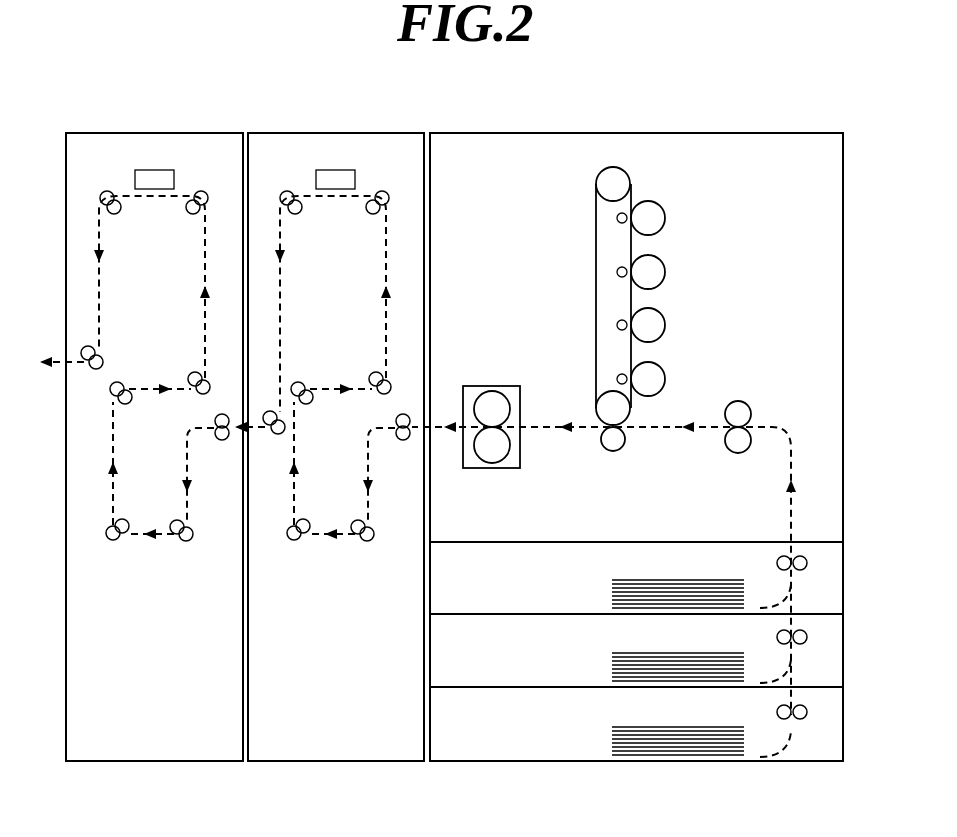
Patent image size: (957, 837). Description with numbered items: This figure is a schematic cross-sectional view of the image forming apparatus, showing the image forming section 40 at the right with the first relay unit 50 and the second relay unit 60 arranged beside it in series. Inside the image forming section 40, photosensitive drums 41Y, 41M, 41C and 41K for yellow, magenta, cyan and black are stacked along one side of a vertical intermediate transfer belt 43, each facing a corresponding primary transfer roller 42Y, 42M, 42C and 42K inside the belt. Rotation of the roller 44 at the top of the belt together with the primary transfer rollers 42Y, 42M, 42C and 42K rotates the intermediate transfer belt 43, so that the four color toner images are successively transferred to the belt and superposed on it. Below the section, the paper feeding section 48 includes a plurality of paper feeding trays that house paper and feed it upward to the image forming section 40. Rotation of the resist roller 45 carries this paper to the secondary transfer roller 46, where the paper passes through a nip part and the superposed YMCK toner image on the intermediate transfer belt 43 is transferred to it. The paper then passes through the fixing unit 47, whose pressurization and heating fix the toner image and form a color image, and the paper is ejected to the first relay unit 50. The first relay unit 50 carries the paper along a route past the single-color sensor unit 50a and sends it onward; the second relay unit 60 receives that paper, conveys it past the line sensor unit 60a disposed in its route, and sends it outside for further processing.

The image forming section 40 is at (792, 132).
The photosensitive drum 41Y is at (664, 214).
The photosensitive drum 41M is at (664, 268).
The photosensitive drum 41C is at (664, 322).
The photosensitive drum 41K is at (664, 376).
The primary transfer roller 42Y is at (617, 216).
The primary transfer roller 42M is at (617, 270).
The primary transfer roller 42C is at (617, 323).
The primary transfer roller 42K is at (617, 377).
The intermediate transfer belt 43 is at (597, 348).
The roller 44 is at (625, 172).
The resist roller 45 is at (745, 403).
The secondary transfer roller 46 is at (610, 449).
The fixing unit 47 is at (497, 470).
The paper feeding section 48 is at (846, 542).
The first relay unit 50 is at (336, 133).
The single-color sensor unit 50a is at (342, 170).
The second relay unit 60 is at (155, 133).
The line sensor unit 60a is at (160, 170).